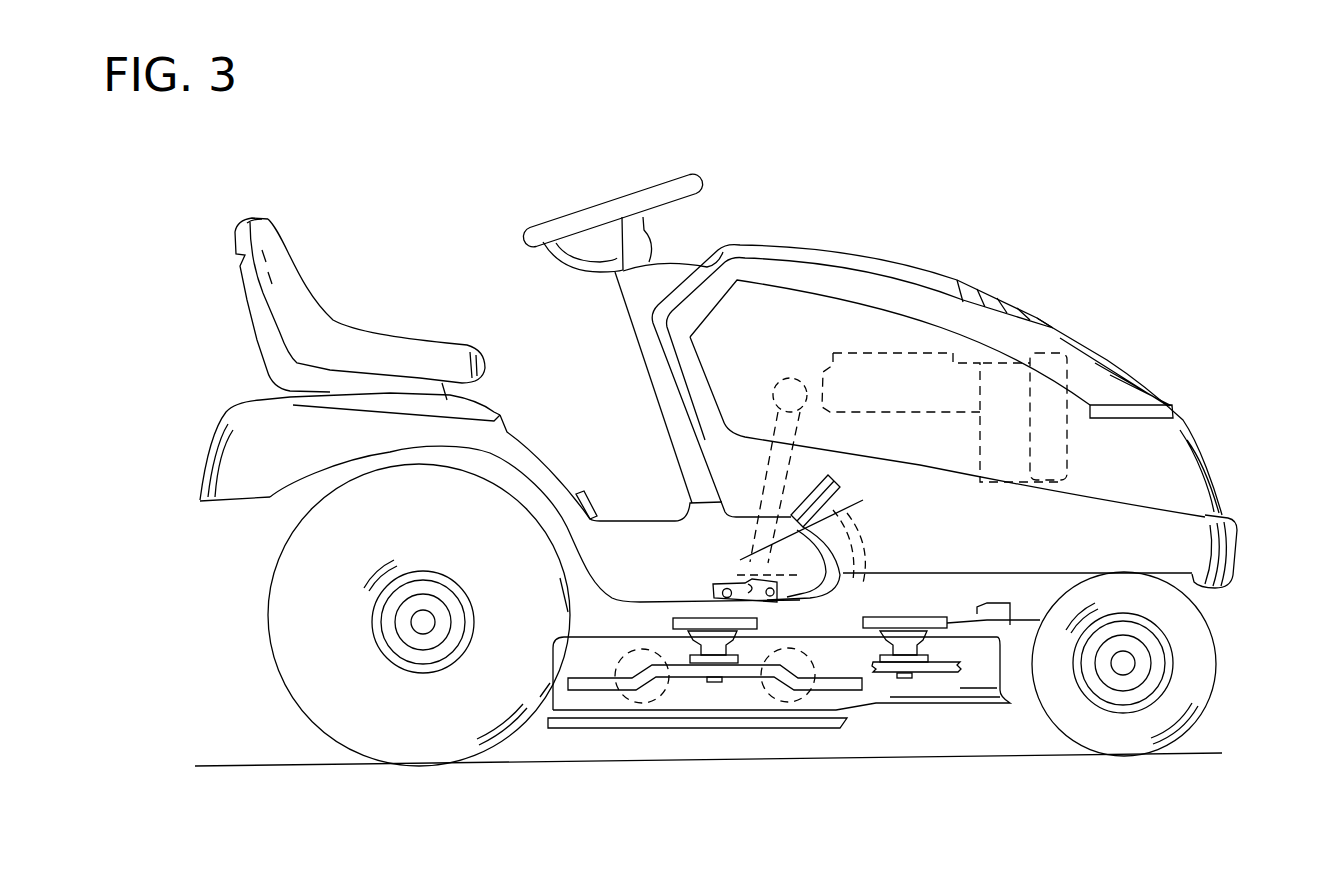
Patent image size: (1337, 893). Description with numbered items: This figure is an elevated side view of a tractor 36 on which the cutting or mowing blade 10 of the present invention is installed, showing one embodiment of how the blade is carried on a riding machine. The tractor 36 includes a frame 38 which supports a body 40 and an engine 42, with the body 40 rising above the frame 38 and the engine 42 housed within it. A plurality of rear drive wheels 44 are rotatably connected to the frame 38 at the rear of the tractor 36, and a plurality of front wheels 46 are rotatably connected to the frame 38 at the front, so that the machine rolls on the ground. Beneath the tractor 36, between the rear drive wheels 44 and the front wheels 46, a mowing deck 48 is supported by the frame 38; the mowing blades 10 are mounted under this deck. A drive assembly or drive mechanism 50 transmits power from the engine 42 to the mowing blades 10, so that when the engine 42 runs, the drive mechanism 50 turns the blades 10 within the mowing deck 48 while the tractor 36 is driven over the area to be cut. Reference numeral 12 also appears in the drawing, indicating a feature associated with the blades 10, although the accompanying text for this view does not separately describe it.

The tractor 36 is at (1022, 92).
The frame 38 is at (1240, 540).
The body 40 is at (969, 278).
The engine 42 is at (852, 348).
The rear drive wheels 44 is at (266, 588).
The front wheels 46 is at (1219, 686).
The mowing deck 48 is at (838, 726).
The mowing blade 10 is at (588, 676).
The cutting blade 12 is at (772, 694).
The drive mechanism 50 is at (858, 619).